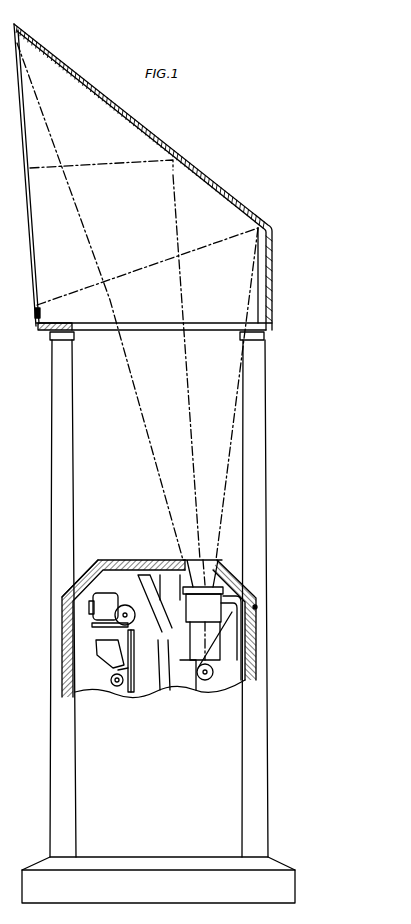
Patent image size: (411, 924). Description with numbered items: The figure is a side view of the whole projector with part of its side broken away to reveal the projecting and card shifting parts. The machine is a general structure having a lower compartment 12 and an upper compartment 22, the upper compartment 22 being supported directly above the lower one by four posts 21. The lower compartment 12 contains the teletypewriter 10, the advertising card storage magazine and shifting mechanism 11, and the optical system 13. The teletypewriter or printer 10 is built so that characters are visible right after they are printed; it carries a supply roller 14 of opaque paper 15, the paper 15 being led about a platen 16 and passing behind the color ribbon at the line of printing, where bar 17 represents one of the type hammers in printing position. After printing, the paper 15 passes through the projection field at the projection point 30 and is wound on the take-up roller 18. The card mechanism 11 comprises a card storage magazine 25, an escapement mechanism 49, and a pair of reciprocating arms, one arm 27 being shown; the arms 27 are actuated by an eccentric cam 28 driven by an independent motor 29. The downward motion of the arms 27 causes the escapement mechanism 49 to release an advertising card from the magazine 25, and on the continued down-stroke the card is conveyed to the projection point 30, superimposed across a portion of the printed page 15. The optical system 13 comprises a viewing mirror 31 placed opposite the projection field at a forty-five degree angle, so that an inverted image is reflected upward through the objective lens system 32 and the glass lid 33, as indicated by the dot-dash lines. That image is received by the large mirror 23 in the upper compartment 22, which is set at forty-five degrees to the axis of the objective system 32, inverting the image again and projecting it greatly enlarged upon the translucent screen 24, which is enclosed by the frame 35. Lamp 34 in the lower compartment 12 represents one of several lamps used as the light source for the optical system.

The teletypewriter 10 is at (134, 690).
The advertising card storage magazine and shifting mechanism 11 is at (142, 603).
The lower compartment 12 is at (80, 650).
The optical system 13 is at (228, 600).
The supply roller 14 is at (124, 688).
The paper 15 is at (128, 700).
The platen 16 is at (158, 695).
The bar 17 is at (170, 693).
The take-up roller 18 is at (105, 650).
The posts 21 is at (66, 395).
The upper compartment 22 is at (145, 152).
The large mirror 23 is at (135, 132).
The screen 24 is at (34, 234).
The card storage magazine 25 is at (157, 570).
The reciprocating arm 27 is at (131, 560).
The eccentric cam 28 is at (120, 625).
The independent motor 29 is at (95, 582).
The projection point 30 is at (177, 677).
The viewing mirror 31 is at (232, 683).
The objective lens system 32 is at (227, 586).
The glass lid 33 is at (210, 558).
The lamp 34 is at (194, 693).
The frame 35 is at (34, 314).
The escapement mechanism 49 is at (182, 572).